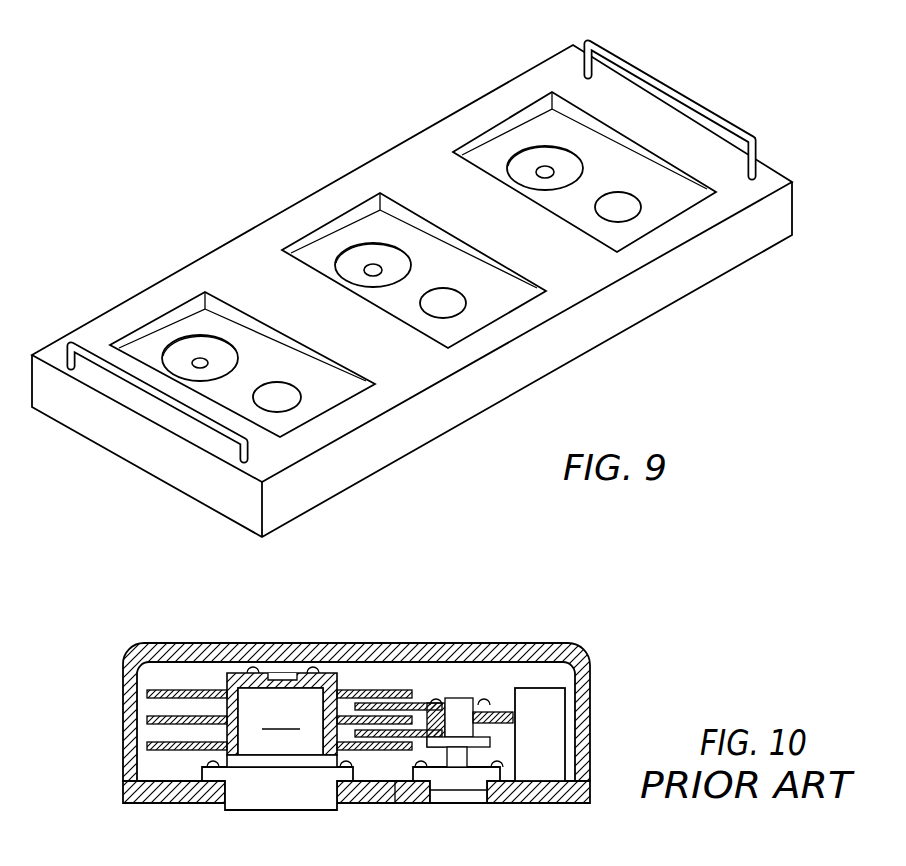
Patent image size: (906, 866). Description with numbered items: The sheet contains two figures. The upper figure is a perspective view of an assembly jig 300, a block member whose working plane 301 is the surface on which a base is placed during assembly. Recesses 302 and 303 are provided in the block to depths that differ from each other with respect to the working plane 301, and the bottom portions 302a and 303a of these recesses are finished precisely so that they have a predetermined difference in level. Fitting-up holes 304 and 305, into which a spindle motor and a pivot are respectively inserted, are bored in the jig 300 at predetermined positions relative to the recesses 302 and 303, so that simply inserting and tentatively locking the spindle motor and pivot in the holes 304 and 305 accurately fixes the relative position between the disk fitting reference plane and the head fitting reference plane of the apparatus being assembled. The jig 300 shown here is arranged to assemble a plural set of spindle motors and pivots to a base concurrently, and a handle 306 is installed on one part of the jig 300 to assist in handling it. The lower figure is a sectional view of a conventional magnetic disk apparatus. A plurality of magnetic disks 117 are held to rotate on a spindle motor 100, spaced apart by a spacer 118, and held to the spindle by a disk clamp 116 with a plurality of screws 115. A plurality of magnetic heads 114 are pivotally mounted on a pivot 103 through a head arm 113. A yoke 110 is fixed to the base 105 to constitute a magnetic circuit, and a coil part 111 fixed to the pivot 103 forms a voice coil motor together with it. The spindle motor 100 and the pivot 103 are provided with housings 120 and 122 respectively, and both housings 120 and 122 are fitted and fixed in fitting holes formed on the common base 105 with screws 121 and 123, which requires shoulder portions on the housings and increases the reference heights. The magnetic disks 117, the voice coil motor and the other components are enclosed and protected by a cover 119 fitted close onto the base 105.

In FIG. 9, the assembly jig 300 is at (694, 88).
In FIG. 9, the working plane 301 is at (260, 232).
In FIG. 9, the recess 302 is at (480, 153).
In FIG. 9, the bottom portion of recess 302a is at (540, 120).
In FIG. 9, the recess 303 is at (348, 258).
In FIG. 9, the bottom portion of recess 303a is at (375, 250).
In FIG. 9, the fitting-up hole 304 is at (452, 300).
In FIG. 9, the fitting-up hole 305 is at (200, 360).
In FIG. 9, the handle 306 is at (90, 345).
In FIG. 10, the spindle motor 100 is at (282, 720).
In FIG. 10, the pivot 103 is at (458, 703).
In FIG. 10, the base 105 is at (585, 803).
In FIG. 10, the yoke 110 is at (557, 755).
In FIG. 10, the coil part 111 is at (503, 713).
In FIG. 10, the head arm 113 is at (406, 707).
In FIG. 10, the magnetic head 114 is at (358, 697).
In FIG. 10, the screw 115 is at (253, 668).
In FIG. 10, the disk clamp 116 is at (333, 677).
In FIG. 10, the magnetic disk 117 is at (167, 690).
In FIG. 10, the spacer 118 is at (235, 703).
In FIG. 10, the cover 119 is at (587, 680).
In FIG. 10, the housing 120 is at (245, 800).
In FIG. 10, the screw 121 is at (227, 757).
In FIG. 10, the housing 122 is at (470, 781).
In FIG. 10, the screw 123 is at (415, 764).